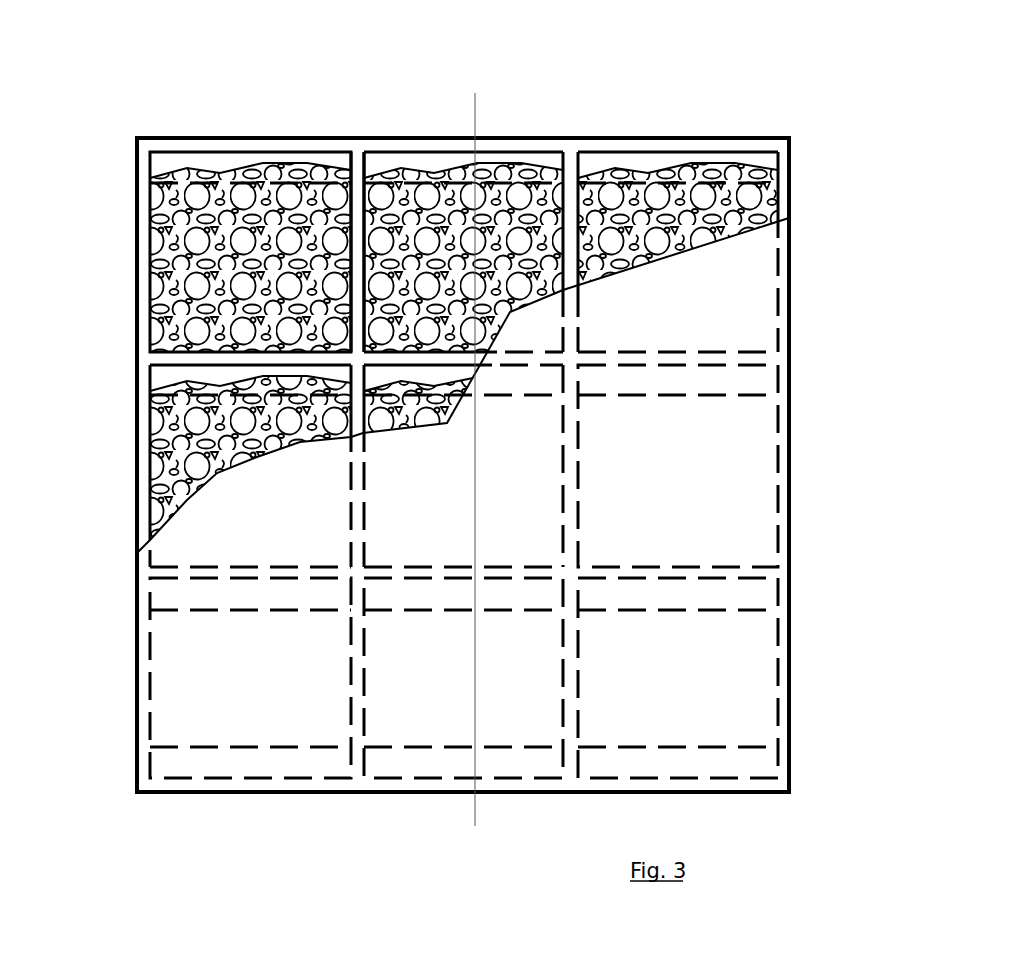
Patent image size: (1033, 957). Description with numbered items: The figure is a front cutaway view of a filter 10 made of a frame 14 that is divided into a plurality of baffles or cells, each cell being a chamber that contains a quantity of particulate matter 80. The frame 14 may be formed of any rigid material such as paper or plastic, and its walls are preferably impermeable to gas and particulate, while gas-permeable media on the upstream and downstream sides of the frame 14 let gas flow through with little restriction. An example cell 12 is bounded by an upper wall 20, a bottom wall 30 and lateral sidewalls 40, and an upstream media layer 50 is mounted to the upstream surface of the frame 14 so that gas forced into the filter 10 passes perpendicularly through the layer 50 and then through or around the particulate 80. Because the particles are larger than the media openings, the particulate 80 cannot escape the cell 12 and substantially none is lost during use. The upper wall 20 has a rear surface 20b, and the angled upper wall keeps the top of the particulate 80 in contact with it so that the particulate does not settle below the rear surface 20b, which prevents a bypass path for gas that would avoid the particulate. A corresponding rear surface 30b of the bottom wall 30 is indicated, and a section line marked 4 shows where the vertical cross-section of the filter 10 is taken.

The filter 10 is at (717, 108).
The cell 12 is at (148, 311).
The frame 14 is at (792, 490).
The upper wall 20 is at (232, 147).
The rear surface of the upper wall 20b is at (768, 178).
The bottom wall 30 is at (187, 356).
The rear wall of lower compartment 30b is at (750, 395).
The lateral sidewalls 40 is at (145, 203).
The upstream media layer 50 is at (187, 540).
The particulate matter 80 is at (170, 267).
The section line 4- 4 is at (475, 93).